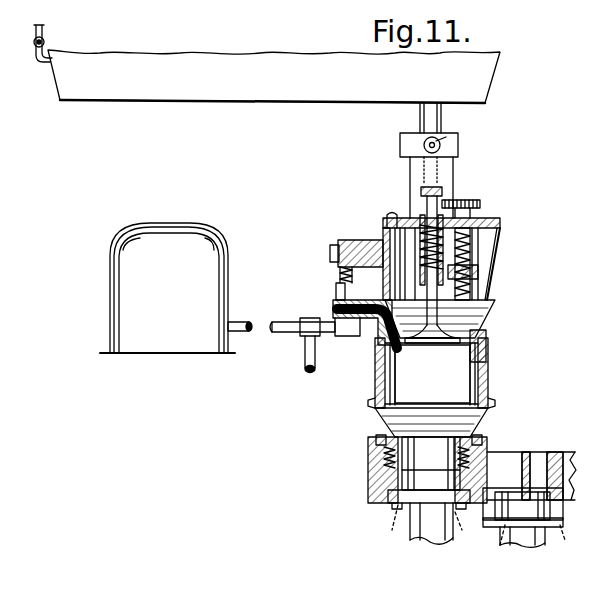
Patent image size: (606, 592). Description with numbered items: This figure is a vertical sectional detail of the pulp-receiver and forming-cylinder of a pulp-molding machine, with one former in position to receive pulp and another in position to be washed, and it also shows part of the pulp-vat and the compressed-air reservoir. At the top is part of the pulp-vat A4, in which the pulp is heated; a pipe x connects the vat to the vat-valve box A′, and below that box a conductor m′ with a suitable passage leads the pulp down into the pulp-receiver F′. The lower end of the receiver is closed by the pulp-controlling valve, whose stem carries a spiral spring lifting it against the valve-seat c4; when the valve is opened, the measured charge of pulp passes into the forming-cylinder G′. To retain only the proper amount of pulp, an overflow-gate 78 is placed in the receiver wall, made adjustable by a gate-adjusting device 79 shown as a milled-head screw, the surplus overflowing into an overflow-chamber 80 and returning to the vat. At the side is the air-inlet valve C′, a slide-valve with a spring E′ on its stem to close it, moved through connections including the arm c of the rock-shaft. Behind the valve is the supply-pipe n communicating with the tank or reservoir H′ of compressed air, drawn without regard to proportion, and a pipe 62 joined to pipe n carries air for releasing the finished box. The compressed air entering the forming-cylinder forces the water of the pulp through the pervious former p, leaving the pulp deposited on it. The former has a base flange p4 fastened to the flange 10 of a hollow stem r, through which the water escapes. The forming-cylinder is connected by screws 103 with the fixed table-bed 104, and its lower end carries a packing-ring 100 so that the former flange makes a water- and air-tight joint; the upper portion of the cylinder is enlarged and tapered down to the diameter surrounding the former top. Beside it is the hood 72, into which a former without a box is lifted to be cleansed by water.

The pulp-vat A4 is at (267, 64).
The pipe x is at (420, 120).
The vat-valve box A′ is at (417, 145).
The pulp-controlling valve a is at (447, 137).
The conductor m′ is at (444, 187).
The gate-adjusting device 79 is at (502, 223).
The overflow-chamber 80 is at (488, 245).
The overflow-gate 78 is at (488, 253).
The pulp-receiver F′ is at (372, 240).
The spring E′ is at (340, 274).
The air-inlet valve C′ is at (342, 300).
The arm c is at (352, 337).
The supply-pipe n is at (302, 335).
The pipe 62 is at (306, 363).
The tank or reservoir H′ is at (176, 288).
The forming-cylinder G′ is at (488, 378).
The valve-seat c4 is at (432, 374).
The table-bed 104 is at (378, 480).
The screws 103 is at (376, 437).
The former p is at (431, 463).
The packing-ring 100 is at (392, 498).
The hollow stem r is at (478, 525).
The flange p4 is at (489, 415).
The flange 10 is at (514, 532).
The hood 72 is at (563, 515).